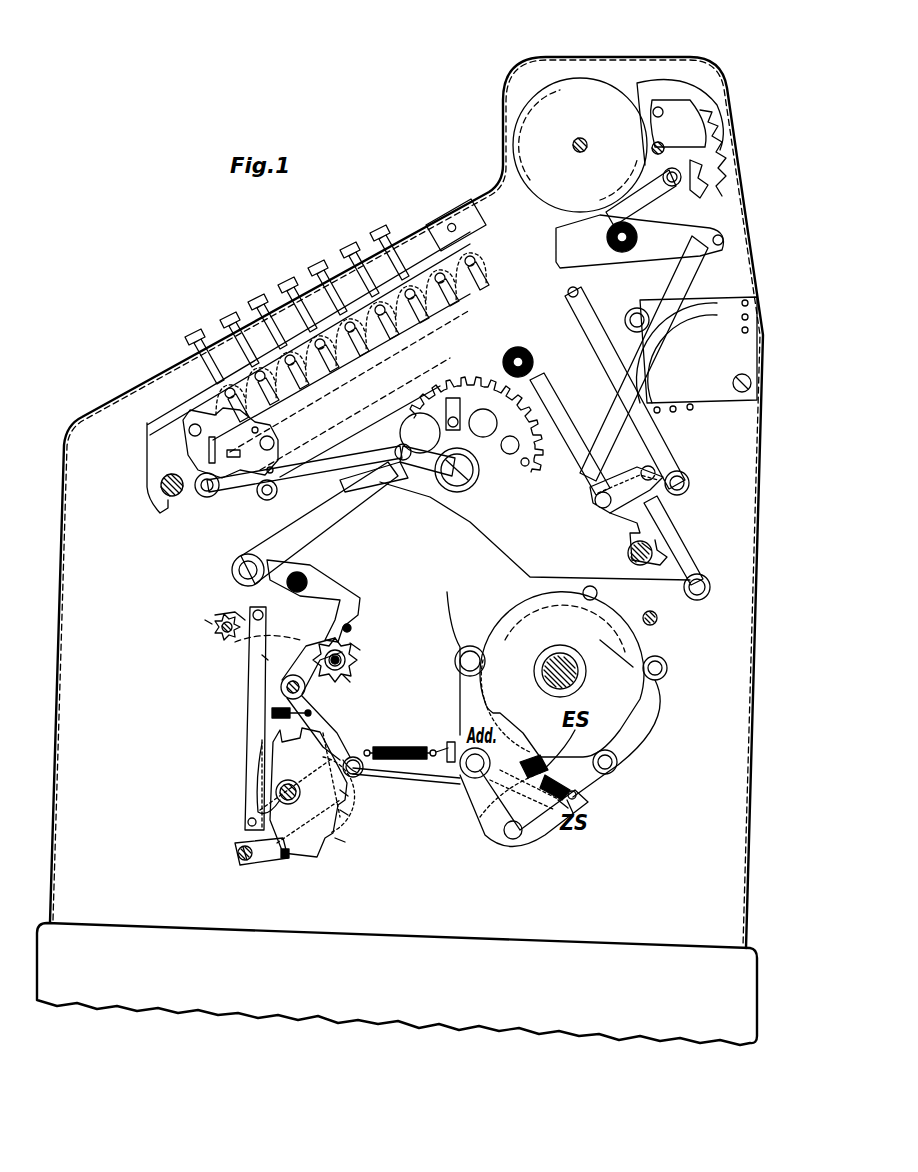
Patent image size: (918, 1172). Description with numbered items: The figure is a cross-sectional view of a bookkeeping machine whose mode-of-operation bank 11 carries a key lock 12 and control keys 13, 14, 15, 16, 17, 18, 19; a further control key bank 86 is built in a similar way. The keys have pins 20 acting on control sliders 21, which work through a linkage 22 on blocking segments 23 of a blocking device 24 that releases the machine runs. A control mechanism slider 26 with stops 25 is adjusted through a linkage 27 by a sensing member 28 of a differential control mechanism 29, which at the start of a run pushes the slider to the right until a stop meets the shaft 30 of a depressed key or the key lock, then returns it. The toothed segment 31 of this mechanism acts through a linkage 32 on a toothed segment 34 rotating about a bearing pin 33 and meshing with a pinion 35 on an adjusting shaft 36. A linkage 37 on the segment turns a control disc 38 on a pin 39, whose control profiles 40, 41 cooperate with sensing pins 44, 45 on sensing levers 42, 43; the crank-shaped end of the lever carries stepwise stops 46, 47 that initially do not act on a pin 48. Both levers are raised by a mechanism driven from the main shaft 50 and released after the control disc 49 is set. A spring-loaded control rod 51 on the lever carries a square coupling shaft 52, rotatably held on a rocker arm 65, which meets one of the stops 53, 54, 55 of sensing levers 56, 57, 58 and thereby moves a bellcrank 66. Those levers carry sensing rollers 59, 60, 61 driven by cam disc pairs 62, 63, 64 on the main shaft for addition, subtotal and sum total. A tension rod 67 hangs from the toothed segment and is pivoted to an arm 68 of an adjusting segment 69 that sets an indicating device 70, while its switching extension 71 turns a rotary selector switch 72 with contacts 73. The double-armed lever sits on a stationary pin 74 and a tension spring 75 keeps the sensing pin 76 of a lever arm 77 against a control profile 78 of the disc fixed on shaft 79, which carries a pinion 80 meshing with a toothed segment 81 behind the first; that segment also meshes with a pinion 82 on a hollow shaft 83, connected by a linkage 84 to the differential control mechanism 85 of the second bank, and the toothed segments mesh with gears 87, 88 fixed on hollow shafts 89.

The mode-of-operation bank 11 is at (406, 502).
The further control key bank 86 is at (152, 453).
The key lock 12 is at (462, 206).
The control key 13 is at (196, 336).
The control key 14 is at (230, 318).
The control key 15 is at (258, 300).
The control key 16 is at (290, 283).
The control key 17 is at (318, 266).
The control key 18 is at (349, 248).
The control key 19 is at (378, 231).
The pin 20 is at (225, 380).
The control slider 21 is at (255, 385).
The linkage 22 is at (660, 196).
The blocking segment 23 is at (705, 188).
The blocking device 24 is at (690, 127).
The stop 25 is at (304, 485).
The control mechanism slider 26 is at (384, 447).
The linkage 27 is at (273, 498).
The sensing member 28 is at (432, 472).
The differential control mechanism 29 is at (475, 489).
The differential control mechanism 85 is at (467, 486).
The shaft 30 is at (480, 381).
The toothed segment 31 is at (400, 491).
The linkage 32 is at (318, 524).
The linkage 84 is at (352, 512).
The bearing pin 33 is at (308, 578).
The toothed segment 34 is at (347, 601).
The toothed segment 81 is at (352, 612).
The pinion 35 is at (212, 599).
The pinion 82 is at (217, 617).
The adjusting shaft 36 is at (210, 625).
The linkage 37 is at (253, 657).
The control disc 38 is at (267, 773).
The pin 39 is at (280, 807).
The control profile 40 is at (347, 813).
The control profile 41 is at (257, 738).
The sensing lever 42 is at (260, 867).
The sensing lever 43 is at (327, 722).
The sensing pin 44 is at (277, 858).
The sensing pin 45 is at (357, 747).
The stop 46 is at (343, 793).
The stop 47 is at (343, 812).
The pin 48 is at (340, 840).
The control disc 49 is at (355, 643).
The main shaft 50 is at (575, 680).
The control rod 51 is at (423, 773).
The coupling shaft 52 is at (462, 708).
The stop 53 is at (497, 833).
The stop 54 is at (547, 827).
The stop 55 is at (567, 807).
The sensing lever 56 is at (610, 785).
The sensing lever 57 is at (548, 777).
The sensing lever 58 is at (583, 783).
The sensing roller 59 is at (535, 664).
The sensing roller 60 is at (535, 664).
The sensing roller 61 is at (458, 626).
The cam disc pair 62 is at (608, 674).
The cam disc pair 63 is at (562, 674).
The cam disc pair 64 is at (610, 720).
The rocker arm 65 is at (480, 817).
The bellcrank 66 is at (450, 747).
The tension rod 67 is at (607, 407).
The arm 68 is at (670, 246).
The adjusting segment 69 is at (509, 147).
The indicating device 70 is at (528, 137).
The switching extension 71 is at (703, 310).
The rotary selector switch 72 is at (720, 398).
The contacts 73 is at (747, 332).
The stationary pin 74 is at (285, 683).
The tension spring 75 is at (270, 713).
The sensing pin 76 is at (350, 627).
The lever arm 77 is at (293, 668).
The control profile 78 is at (343, 675).
The shaft 79 is at (357, 665).
The pinion 80 is at (357, 660).
The hollow shaft 83 is at (207, 620).
The gear 87 is at (623, 308).
The gear 88 is at (637, 320).
The hollow shaft 89 is at (535, 357).